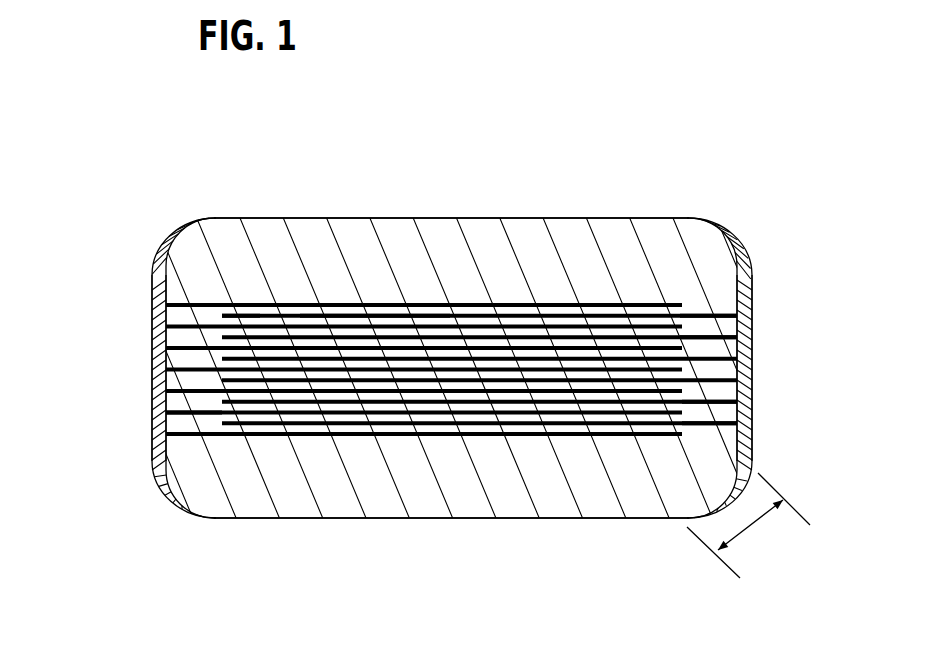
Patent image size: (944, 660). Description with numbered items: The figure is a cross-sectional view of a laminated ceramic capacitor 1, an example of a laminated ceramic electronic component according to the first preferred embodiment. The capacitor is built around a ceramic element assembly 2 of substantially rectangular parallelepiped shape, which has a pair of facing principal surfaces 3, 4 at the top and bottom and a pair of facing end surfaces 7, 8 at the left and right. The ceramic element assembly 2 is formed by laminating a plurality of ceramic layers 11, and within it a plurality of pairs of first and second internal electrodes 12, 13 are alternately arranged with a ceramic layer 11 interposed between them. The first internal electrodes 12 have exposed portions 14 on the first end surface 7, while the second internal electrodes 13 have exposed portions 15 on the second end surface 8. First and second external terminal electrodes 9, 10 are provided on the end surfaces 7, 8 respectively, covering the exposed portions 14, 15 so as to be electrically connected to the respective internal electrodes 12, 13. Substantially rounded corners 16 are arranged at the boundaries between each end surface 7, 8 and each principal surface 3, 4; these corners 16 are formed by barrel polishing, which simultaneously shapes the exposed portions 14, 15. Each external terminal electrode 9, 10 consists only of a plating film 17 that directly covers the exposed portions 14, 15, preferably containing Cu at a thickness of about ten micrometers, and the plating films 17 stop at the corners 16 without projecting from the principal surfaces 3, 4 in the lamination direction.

The laminated ceramic capacitor 1 is at (112, 137).
The ceramic element assembly 2 is at (563, 212).
The first principal surface 3 is at (463, 218).
The second principal surface 4 is at (505, 518).
The first end surface 7 is at (166, 358).
The second end surface 8 is at (750, 362).
The first external terminal electrode 9 is at (143, 296).
The second external terminal electrode 10 is at (762, 278).
The ceramic layer 11 is at (393, 316).
The first internal electrode 12 is at (213, 306).
The second internal electrode 13 is at (715, 305).
The exposed portion of first internal electrode 14 is at (166, 413).
The exposed portion of second internal electrode 15 is at (750, 422).
The rounded corner 16 is at (755, 527).
The plating film 17 is at (157, 450).